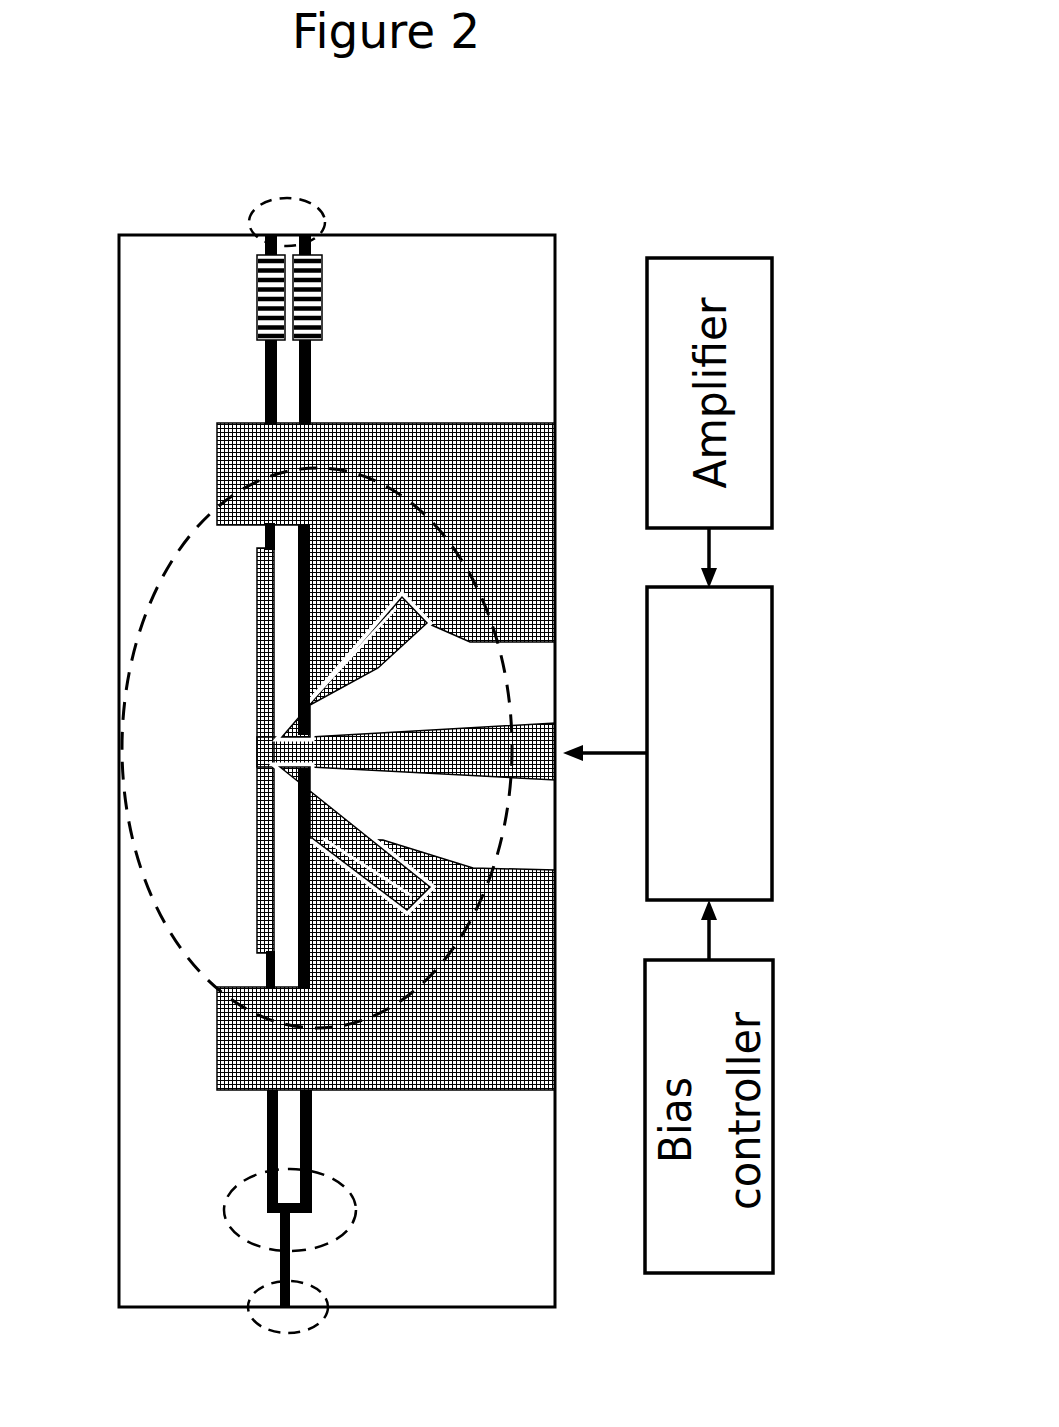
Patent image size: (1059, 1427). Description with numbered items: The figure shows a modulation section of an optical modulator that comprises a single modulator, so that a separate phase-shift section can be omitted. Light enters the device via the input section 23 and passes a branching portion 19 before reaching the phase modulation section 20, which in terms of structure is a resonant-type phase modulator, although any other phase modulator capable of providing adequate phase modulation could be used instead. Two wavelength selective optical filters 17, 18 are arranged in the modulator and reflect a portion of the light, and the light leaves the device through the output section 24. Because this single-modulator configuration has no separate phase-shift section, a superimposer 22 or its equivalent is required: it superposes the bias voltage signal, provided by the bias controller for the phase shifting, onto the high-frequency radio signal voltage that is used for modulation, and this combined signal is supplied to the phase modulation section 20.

The wavelength selective optical filter 17 is at (258, 297).
The wavelength selective optical filter 18 is at (322, 298).
The branching portion 19 is at (222, 1207).
The phase modulation section 20 is at (143, 654).
The superimposer 22 is at (647, 679).
The input section 23 is at (263, 1287).
The output section 24 is at (327, 222).